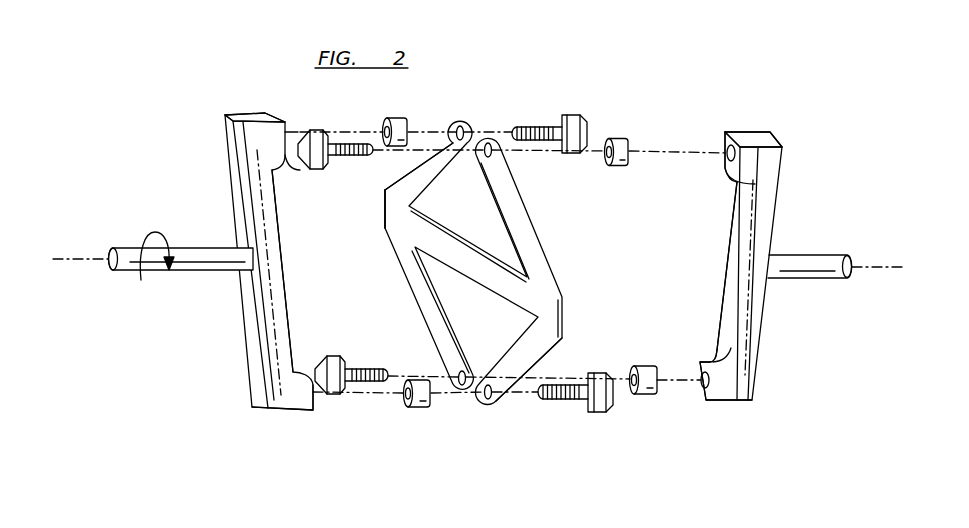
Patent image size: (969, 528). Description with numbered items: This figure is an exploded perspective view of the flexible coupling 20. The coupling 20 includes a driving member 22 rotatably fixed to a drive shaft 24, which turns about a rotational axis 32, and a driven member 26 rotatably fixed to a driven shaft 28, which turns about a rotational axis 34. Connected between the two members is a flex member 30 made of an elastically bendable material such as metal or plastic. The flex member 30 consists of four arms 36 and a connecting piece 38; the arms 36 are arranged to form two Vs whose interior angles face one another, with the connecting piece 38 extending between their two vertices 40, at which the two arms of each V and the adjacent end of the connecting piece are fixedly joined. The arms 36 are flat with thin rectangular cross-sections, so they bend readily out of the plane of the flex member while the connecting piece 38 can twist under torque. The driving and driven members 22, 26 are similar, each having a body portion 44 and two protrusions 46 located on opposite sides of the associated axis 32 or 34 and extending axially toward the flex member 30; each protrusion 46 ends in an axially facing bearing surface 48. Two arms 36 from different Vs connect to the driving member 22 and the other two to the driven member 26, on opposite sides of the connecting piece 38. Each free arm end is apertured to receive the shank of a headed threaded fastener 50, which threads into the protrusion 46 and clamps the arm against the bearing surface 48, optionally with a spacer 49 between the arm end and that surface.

The flexible coupling 20 is at (674, 76).
The driving member 22 is at (238, 172).
The drive shaft 24 is at (191, 252).
The driven member 26 is at (770, 205).
The driven shaft 28 is at (797, 260).
The flex member 30 is at (535, 252).
The rotational axis of the driving shaft 32 is at (58, 258).
The rotational axis of the driven shaft 34 is at (886, 270).
The arm 36 is at (412, 284).
The connecting piece 38 is at (456, 235).
The vertex 40 is at (388, 222).
The body portion 44 is at (248, 316).
The protrusion 46 is at (260, 123).
The bearing surface 48 is at (290, 130).
The spacer 49 is at (406, 100).
The headed threaded fastener 50 is at (335, 144).